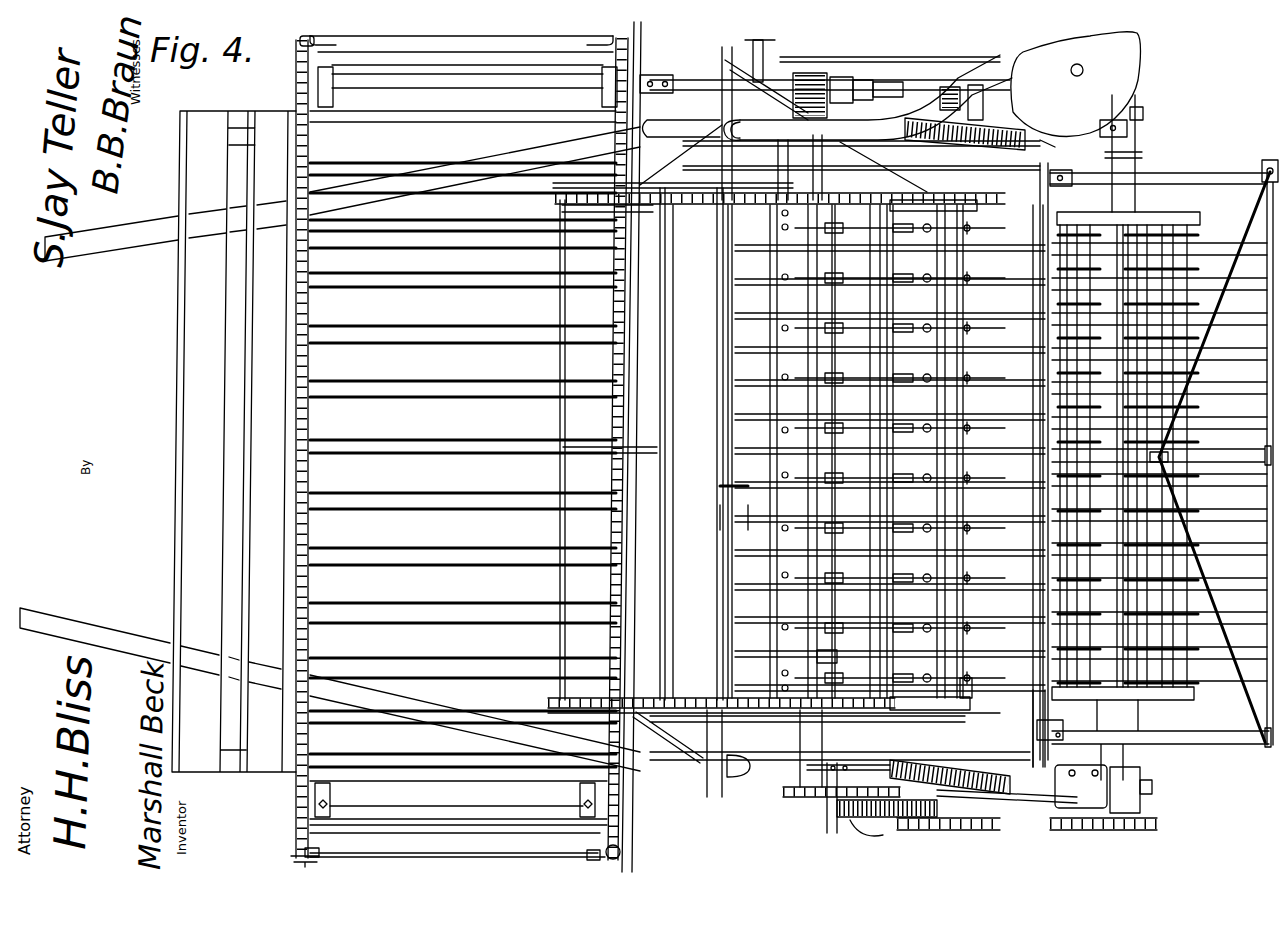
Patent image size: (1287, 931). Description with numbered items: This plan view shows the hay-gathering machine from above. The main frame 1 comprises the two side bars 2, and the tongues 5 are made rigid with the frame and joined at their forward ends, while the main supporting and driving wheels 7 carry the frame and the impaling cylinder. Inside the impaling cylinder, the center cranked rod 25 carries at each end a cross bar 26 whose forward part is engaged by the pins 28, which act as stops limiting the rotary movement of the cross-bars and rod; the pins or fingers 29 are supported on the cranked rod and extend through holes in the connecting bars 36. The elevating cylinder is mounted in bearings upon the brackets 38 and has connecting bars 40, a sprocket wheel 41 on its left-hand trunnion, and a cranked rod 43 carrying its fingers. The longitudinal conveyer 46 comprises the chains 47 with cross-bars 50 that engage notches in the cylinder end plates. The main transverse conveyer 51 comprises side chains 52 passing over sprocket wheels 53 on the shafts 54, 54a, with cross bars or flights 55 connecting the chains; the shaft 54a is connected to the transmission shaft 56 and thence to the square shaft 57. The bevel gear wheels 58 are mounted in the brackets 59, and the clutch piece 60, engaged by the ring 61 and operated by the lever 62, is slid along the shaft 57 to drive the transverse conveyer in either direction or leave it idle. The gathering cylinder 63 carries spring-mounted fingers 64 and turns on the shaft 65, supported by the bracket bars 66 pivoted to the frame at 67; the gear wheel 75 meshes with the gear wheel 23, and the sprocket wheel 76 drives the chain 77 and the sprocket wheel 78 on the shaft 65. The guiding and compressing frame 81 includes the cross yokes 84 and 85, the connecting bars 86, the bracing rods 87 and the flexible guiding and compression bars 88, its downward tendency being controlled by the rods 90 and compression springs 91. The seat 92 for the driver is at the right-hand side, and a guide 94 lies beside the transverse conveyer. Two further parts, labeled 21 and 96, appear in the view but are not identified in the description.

The main frame 1 is at (790, 793).
The side bars 2 is at (748, 768).
The tongues 5 is at (140, 238).
The main supporting and driving wheels 7 is at (737, 190).
The bracket bar 21 is at (680, 106).
The gear wheel 23 is at (837, 824).
The center cranked rod 25 is at (890, 654).
The cross bar 26 is at (857, 828).
The pins 28 is at (823, 818).
The pins or fingers 29 is at (983, 693).
The connecting bars 36 is at (963, 571).
The brackets 38 is at (720, 513).
The connecting bars 40 is at (773, 261).
The sprocket wheel 41 is at (790, 791).
The cranked rod 43 is at (840, 648).
The longitudinal conveyer 46 is at (696, 444).
The chains 47 is at (695, 213).
The cross-bars 50 is at (672, 371).
The main transverse conveyer 51 is at (460, 548).
The side chains 52 is at (309, 534).
The sprocket wheels 53 is at (303, 58).
The shaft 54 is at (456, 800).
The shaft 54a is at (450, 84).
The cross bars or flights 55 is at (423, 448).
The transmission shaft 56 is at (697, 82).
The shaft 57 is at (933, 78).
The bevel gear wheel 58 is at (807, 68).
The brackets 59 is at (1025, 93).
The clutch piece 60 is at (887, 80).
The ring 61 is at (873, 78).
The lever 62 is at (757, 80).
The gathering cylinder 63 is at (1147, 214).
The fingers 64 is at (1191, 475).
The shaft 65 is at (1127, 268).
The bracket bars 66 is at (977, 801).
The pivotal mounting 67 is at (943, 814).
The gear wheel 75 is at (927, 834).
The sprocket wheel 76 is at (913, 821).
The chain 77 is at (990, 834).
The sprocket wheel 78 is at (1137, 828).
The guiding and compressing frame 81 is at (1159, 462).
The cross yoke 84 is at (1263, 164).
The cross yoke 85 is at (1050, 211).
The connecting bars 86 is at (1205, 745).
The bracing rods 87 is at (1237, 301).
The flexible guiding and compression bars 88 is at (747, 487).
The rods 90 is at (1043, 143).
The compression springs 91 is at (995, 144).
The seat 92 is at (1128, 73).
The guide 94 is at (181, 508).
The bar 96 is at (1180, 166).